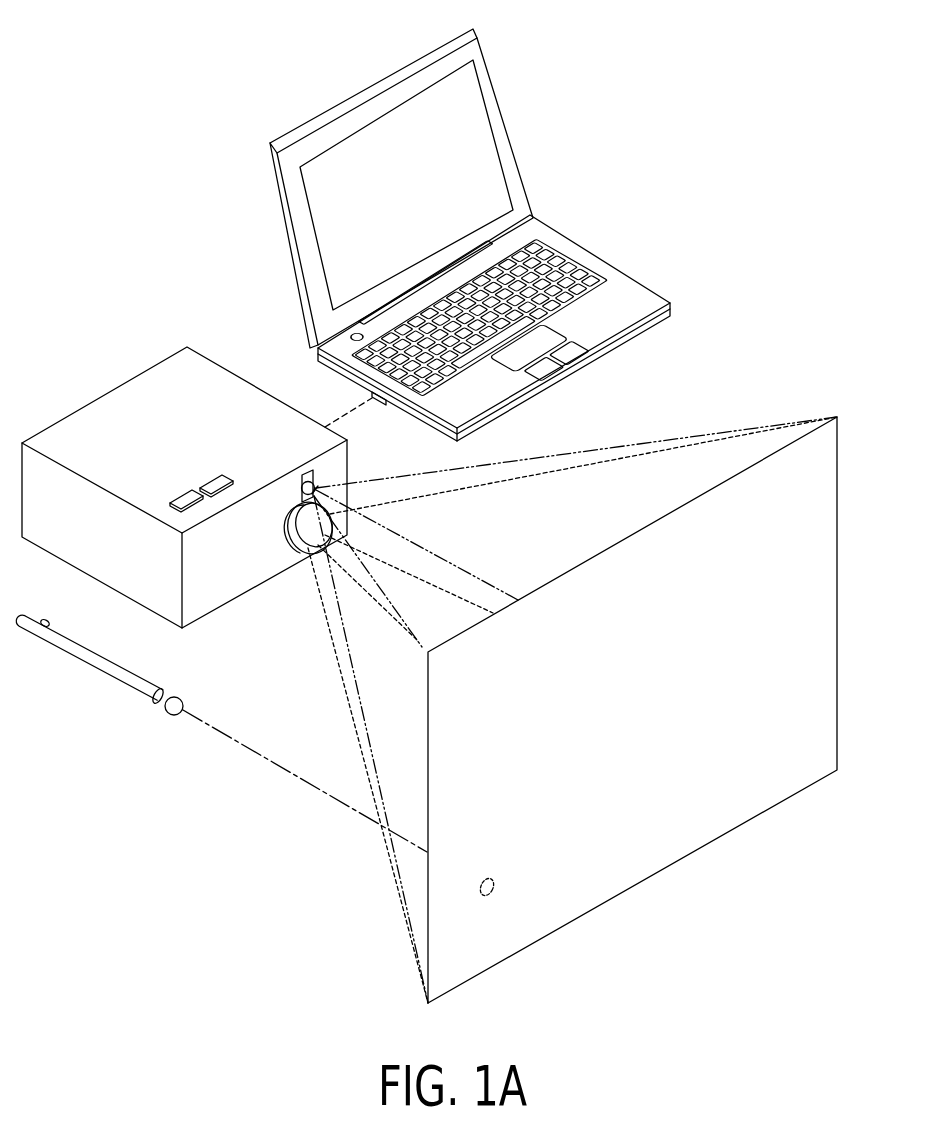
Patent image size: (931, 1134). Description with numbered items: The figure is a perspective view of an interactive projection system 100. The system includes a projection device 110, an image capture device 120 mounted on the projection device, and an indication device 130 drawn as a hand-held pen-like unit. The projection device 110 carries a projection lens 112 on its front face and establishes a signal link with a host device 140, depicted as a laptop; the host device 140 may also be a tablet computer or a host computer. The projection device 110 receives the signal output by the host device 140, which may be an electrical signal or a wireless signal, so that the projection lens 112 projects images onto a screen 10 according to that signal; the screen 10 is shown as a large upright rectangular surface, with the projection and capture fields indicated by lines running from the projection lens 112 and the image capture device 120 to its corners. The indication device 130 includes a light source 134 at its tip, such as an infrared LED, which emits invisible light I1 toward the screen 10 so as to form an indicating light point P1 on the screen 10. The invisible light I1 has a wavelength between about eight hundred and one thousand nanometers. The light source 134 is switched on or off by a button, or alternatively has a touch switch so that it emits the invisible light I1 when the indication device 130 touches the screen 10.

The interactive projection system 100 is at (166, 54).
The screen 10 is at (677, 863).
The projection device 110 is at (125, 400).
The projection lens 112 is at (297, 527).
The image capture device 120 is at (303, 463).
The indication device 130 is at (93, 660).
The light source 134 is at (173, 715).
The host device 140 is at (517, 113).
The invisible light I1 is at (260, 760).
The indicating light point P1 is at (494, 881).